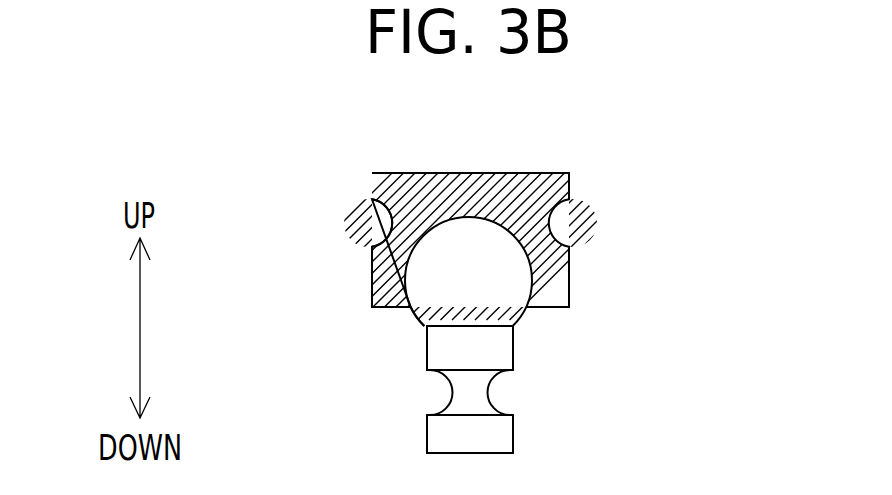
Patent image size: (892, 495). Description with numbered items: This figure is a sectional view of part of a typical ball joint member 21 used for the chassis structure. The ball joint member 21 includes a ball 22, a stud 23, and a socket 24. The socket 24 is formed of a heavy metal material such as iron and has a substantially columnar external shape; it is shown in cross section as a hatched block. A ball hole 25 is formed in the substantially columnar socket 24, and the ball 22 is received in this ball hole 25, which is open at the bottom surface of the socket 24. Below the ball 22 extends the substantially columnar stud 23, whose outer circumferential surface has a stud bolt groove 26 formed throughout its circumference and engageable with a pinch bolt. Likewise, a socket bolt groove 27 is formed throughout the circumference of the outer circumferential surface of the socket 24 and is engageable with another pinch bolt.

The ball joint member 21 is at (670, 207).
The ball 22 is at (508, 310).
The stud 23 is at (500, 432).
The socket 24 is at (565, 258).
The ball hole 25 is at (398, 340).
The stud bolt groove 26 is at (463, 397).
The socket bolt groove 27 is at (373, 223).